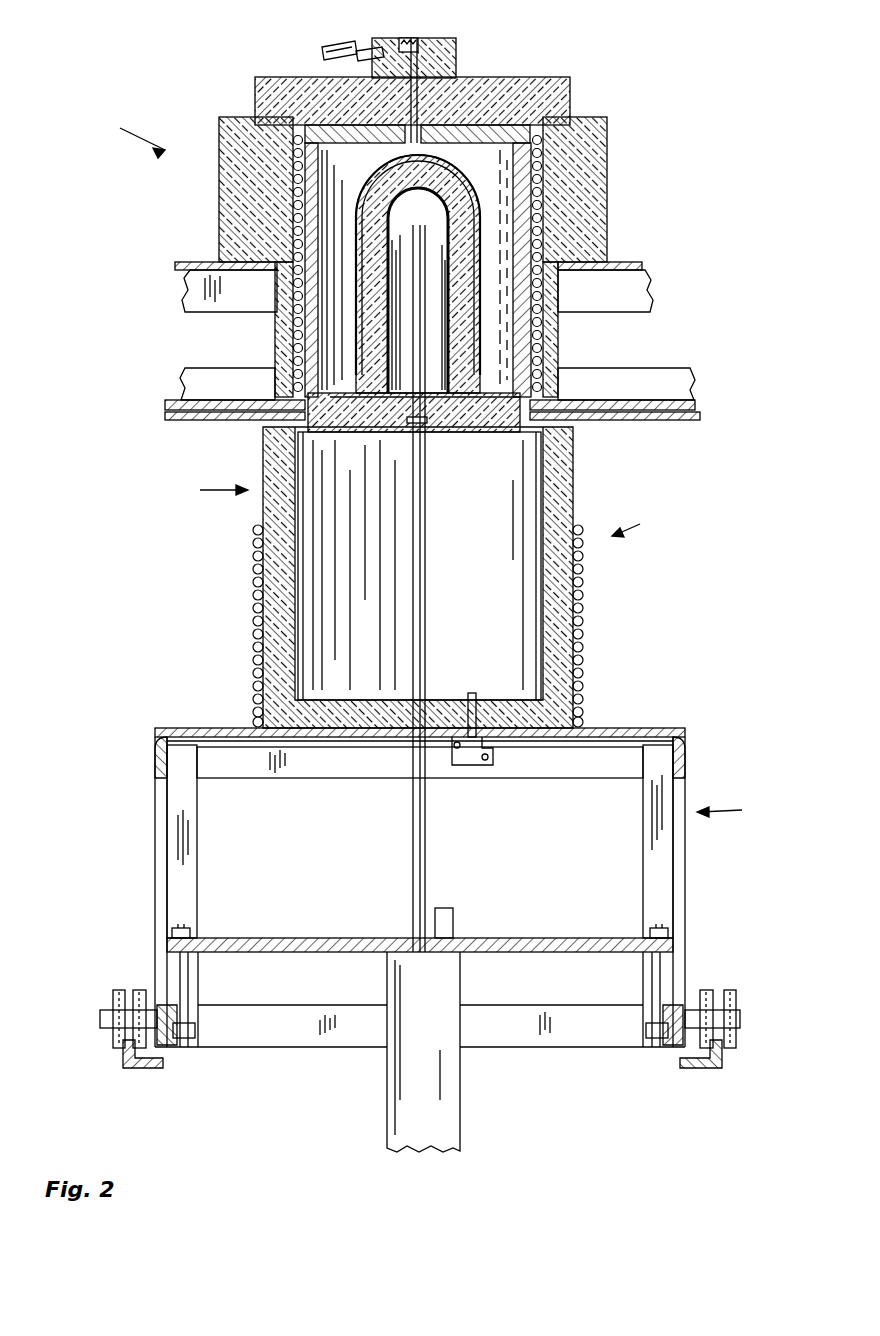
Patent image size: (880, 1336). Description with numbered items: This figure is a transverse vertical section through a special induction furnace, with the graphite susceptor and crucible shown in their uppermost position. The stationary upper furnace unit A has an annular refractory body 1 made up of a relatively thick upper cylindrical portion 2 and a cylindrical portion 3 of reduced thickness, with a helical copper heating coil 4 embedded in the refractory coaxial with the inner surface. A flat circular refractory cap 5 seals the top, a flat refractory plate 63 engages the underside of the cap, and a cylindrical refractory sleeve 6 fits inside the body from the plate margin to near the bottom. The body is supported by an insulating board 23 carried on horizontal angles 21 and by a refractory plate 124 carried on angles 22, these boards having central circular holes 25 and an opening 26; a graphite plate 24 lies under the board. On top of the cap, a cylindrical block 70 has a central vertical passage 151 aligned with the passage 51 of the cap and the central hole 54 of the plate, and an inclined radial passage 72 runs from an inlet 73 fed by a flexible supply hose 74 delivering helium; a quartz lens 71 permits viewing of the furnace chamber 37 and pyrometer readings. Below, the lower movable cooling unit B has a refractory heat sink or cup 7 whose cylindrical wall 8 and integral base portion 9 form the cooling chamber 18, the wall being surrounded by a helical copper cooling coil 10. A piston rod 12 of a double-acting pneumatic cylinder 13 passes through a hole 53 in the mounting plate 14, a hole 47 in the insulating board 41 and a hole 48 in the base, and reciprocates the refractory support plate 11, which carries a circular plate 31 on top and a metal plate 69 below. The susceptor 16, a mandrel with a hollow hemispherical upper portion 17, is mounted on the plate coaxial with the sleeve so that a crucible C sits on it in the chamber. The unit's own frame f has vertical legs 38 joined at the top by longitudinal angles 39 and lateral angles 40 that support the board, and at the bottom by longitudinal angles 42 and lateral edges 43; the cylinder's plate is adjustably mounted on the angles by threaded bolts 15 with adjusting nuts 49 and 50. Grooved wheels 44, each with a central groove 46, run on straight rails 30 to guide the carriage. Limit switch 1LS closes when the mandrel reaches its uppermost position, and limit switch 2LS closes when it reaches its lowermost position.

The annular refractory body 1 is at (220, 120).
The upper cylindrical portion 2 is at (219, 196).
The cylindrical portion of reduced thickness 3 is at (278, 323).
The helical copper heating coil 4 is at (542, 153).
The refractory cap 5 is at (294, 77).
The cylindrical refractory sleeve 6 is at (478, 278).
The cylindrical refractory heat sink or cup 7 is at (210, 489).
The cylindrical wall 8 is at (573, 464).
The base portion 9 is at (340, 702).
The helical copper cooling coil 10 is at (583, 575).
The refractory support plate 11 is at (353, 435).
The piston rod 12 is at (425, 537).
The pneumatic cylinder 13 is at (388, 1102).
The mounting plate 14 is at (318, 938).
The bolts 15 is at (188, 978).
The susceptor 16 is at (466, 318).
The hollow hemispherical upper portion 17 is at (494, 267).
The cooling chamber 18 is at (419, 566).
The horizontal metal angles 21 is at (185, 290).
The metal angles 22 is at (666, 370).
The insulating board 23 is at (178, 265).
The graphite plate 24 is at (170, 420).
The circular hole 25 is at (236, 290).
The circular opening 26 is at (527, 433).
The longitudinal rails 30 is at (140, 1070).
The circular plate 31 is at (466, 399).
The furnace chamber 37 is at (343, 269).
The vertical legs 38 is at (193, 852).
The longitudinal horizontal angles 39 is at (155, 764).
The lateral horizontal angles 40 is at (282, 772).
The insulating board 41 is at (618, 728).
The longitudinal horizontal angles 42 is at (180, 1058).
The horizontal lateral edges 43 is at (272, 1005).
The grooved wheels 44 is at (104, 1019).
The central groove 46 is at (122, 990).
The hole 47 is at (412, 752).
The central cylindrical hole 48 is at (412, 700).
The adjusting nuts 49 is at (644, 1028).
The adjusting nuts 50 is at (200, 934).
The central vertical passage 51 is at (448, 72).
The circular hole 53 is at (413, 935).
The central hole 54 is at (430, 142).
The refractory plate 63 is at (502, 130).
The metal plate 69 is at (410, 435).
The block 70 is at (455, 46).
The quartz lens or sight glass 71 is at (420, 40).
The inclined radial passage 72 is at (356, 56).
The inlet 73 is at (398, 38).
The flexible supply hose 74 is at (347, 42).
The refractory plate 124 is at (592, 392).
The central vertical passage 151 is at (456, 32).
The upper furnace unit A is at (129, 136).
The lower movable cooling unit B is at (636, 523).
The crucible C is at (480, 232).
The frame f is at (719, 807).
The limit switch 1LS is at (455, 908).
The limit switch 2LS is at (472, 760).